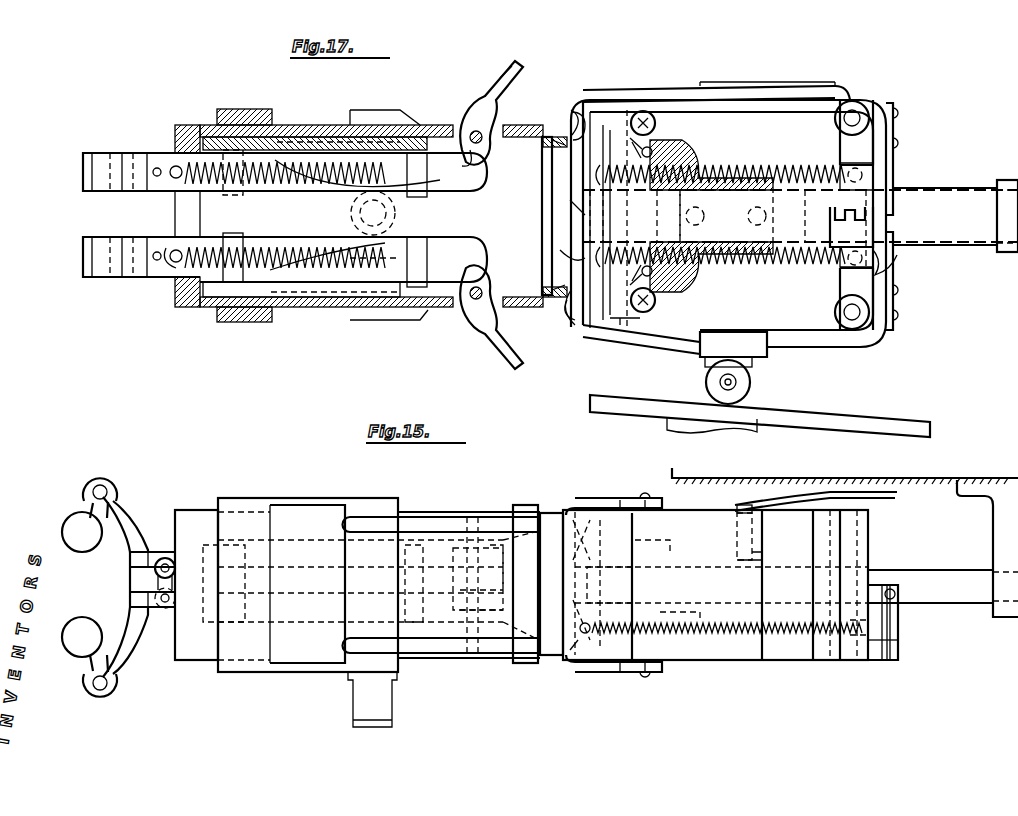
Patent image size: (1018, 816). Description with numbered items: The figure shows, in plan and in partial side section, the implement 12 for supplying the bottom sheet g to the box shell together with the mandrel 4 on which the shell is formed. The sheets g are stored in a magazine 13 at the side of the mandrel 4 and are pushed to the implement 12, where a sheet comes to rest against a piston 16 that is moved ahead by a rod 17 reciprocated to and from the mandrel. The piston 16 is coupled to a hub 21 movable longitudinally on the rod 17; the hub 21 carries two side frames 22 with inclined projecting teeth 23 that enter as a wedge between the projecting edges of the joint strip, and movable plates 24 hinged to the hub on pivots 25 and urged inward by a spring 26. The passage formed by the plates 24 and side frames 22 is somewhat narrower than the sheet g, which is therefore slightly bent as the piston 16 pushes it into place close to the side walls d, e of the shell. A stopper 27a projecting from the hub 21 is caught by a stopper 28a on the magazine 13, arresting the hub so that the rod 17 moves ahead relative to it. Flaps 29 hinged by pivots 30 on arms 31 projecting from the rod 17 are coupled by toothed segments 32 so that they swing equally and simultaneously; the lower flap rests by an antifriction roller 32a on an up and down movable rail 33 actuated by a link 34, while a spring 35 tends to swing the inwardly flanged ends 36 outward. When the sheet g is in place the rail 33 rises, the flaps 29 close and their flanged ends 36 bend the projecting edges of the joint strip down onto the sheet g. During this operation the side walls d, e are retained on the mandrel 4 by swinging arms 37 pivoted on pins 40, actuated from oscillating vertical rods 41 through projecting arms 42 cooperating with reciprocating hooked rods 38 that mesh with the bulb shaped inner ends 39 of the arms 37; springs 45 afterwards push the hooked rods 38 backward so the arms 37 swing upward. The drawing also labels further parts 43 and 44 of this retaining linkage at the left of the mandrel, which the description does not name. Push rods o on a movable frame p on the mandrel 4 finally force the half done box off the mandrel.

In FIG. 17, the mandrel 4 is at (312, 302).
In FIG. 15, the mandrel 4 is at (416, 516).
In FIG. 17, the implement 12 is at (815, 332).
In FIG. 15, the implement 12 is at (746, 652).
In FIG. 15, the magazine 13 is at (930, 482).
In FIG. 17, the piston 16 is at (560, 190).
In FIG. 15, the piston 16 is at (584, 555).
In FIG. 17, the rod 17 is at (955, 198).
In FIG. 15, the rod 17 is at (966, 600).
In FIG. 17, the hub 21 is at (740, 262).
In FIG. 15, the hub 21 is at (720, 565).
In FIG. 17, the side frames 22 is at (612, 302).
In FIG. 15, the side frames 22 is at (617, 670).
In FIG. 17, the projecting teeth 23 is at (548, 240).
In FIG. 15, the projecting teeth 23 is at (568, 660).
In FIG. 17, the movable plates 24 is at (600, 110).
In FIG. 15, the movable plates 24 is at (600, 500).
In FIG. 17, the pivots 25 is at (660, 110).
In FIG. 17, the spring 26 is at (638, 148).
In FIG. 15, the stopper 27a is at (738, 540).
In FIG. 15, the stopper 28a is at (735, 504).
In FIG. 17, the flaps 29 is at (650, 90).
In FIG. 15, the flaps 29 is at (605, 645).
In FIG. 17, the pivots 30 is at (852, 110).
In FIG. 15, the pivots 30 is at (852, 652).
In FIG. 17, the arms 31 is at (887, 133).
In FIG. 15, the arms 31 is at (880, 626).
In FIG. 17, the toothed segments 32 is at (873, 220).
In FIG. 17, the antifriction roller 32a is at (752, 378).
In FIG. 17, the rail 33 is at (630, 414).
In FIG. 17, the link 34 is at (668, 428).
In FIG. 17, the spring 35 is at (897, 254).
In FIG. 15, the spring 35 is at (890, 648).
In FIG. 17, the inwardly flanged ends 36 is at (580, 108).
In FIG. 17, the swinging arms 37 is at (506, 76).
In FIG. 15, the swinging arms 37 is at (498, 605).
In FIG. 17, the hooked rods 38 is at (478, 252).
In FIG. 15, the hooked rods 38 is at (468, 606).
In FIG. 17, the bulb shaped inner ends 39 is at (488, 150).
In FIG. 17, the pins 40 is at (470, 128).
In FIG. 15, the pins 40 is at (488, 645).
In FIG. 15, the oscillating vertical rods 41 is at (70, 540).
In FIG. 15, the projecting arms 42 is at (85, 497).
In FIG. 17, the push rod 43 is at (104, 161).
In FIG. 15, the push rod 43 is at (122, 510).
In FIG. 17, the pin 44 is at (163, 270).
In FIG. 15, the pin 44 is at (147, 555).
In FIG. 17, the springs 45 is at (275, 248).
In FIG. 17, the movable frame p is at (248, 321).
In FIG. 15, the movable frame p is at (316, 489).
In FIG. 17, the push rods o is at (452, 308).
In FIG. 15, the push rods o is at (418, 655).
In FIG. 17, the strip e is at (560, 282).
In FIG. 15, the strip e is at (550, 650).
In FIG. 17, the sheet g is at (565, 205).
In FIG. 15, the sheet g is at (548, 510).
In FIG. 17, the strip d is at (570, 320).